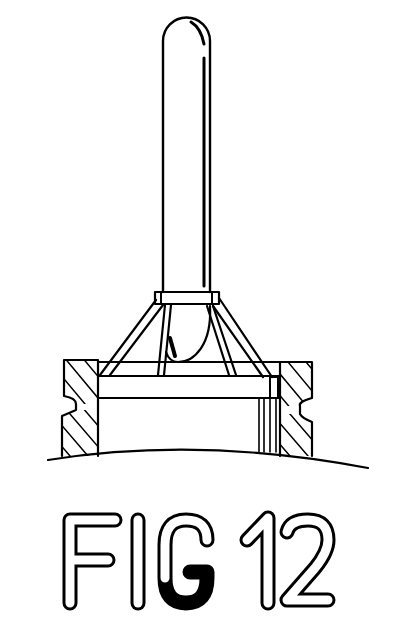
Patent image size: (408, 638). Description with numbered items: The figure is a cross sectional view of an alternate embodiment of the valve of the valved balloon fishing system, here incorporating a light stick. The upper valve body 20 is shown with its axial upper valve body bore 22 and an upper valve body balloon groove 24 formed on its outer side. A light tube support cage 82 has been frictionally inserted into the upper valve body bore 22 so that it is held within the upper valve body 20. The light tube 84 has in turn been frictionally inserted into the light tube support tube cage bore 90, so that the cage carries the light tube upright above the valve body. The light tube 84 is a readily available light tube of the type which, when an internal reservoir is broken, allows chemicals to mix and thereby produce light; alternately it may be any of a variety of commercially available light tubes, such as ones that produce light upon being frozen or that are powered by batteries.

The light tube 84 is at (212, 146).
The light tube support tube cage bore 90 is at (154, 293).
The light tube support cage 82 is at (232, 318).
The upper valve body balloon groove 24 is at (98, 416).
The upper valve body 20 is at (312, 385).
The upper valve body bore 22 is at (243, 437).